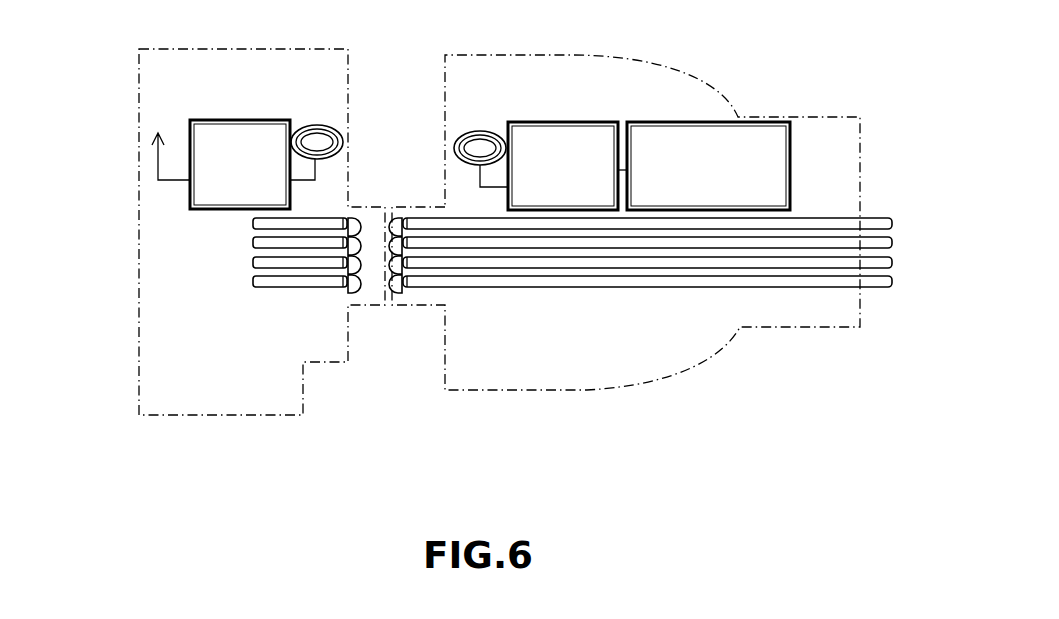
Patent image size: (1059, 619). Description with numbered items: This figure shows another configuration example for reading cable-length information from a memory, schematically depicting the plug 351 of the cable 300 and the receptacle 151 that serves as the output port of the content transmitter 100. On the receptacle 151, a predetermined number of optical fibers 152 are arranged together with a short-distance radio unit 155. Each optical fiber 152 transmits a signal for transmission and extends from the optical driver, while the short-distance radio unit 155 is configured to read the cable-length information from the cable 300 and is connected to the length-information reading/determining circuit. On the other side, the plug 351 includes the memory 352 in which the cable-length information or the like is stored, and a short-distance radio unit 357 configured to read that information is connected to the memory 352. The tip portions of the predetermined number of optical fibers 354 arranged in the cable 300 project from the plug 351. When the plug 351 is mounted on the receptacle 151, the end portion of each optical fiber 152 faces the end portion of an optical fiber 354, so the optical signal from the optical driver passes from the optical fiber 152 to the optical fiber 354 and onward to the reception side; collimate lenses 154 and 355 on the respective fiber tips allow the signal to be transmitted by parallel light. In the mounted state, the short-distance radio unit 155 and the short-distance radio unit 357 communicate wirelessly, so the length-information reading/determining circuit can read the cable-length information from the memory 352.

The content transmitter 100 is at (92, 491).
The receptacle 151 is at (222, 416).
The optical fibers 152 is at (300, 288).
The collimate lens 154 is at (352, 302).
The short-distance radio unit 155 is at (240, 120).
The cable 300 is at (847, 467).
The plug 351 is at (593, 391).
The memory 352 is at (708, 122).
The optical fibers 354 is at (510, 283).
The collimate lens 355 is at (393, 300).
The short-distance radio unit 357 is at (567, 122).